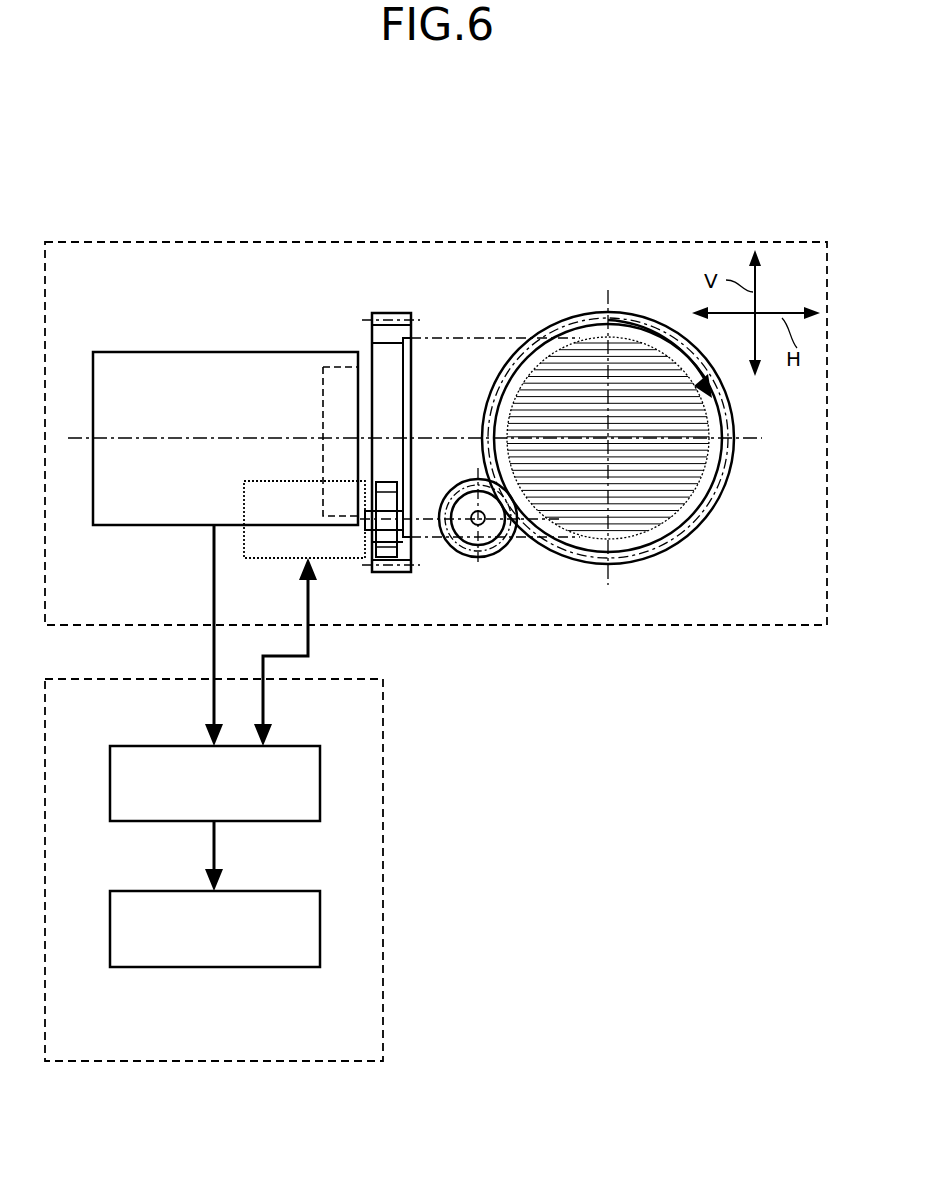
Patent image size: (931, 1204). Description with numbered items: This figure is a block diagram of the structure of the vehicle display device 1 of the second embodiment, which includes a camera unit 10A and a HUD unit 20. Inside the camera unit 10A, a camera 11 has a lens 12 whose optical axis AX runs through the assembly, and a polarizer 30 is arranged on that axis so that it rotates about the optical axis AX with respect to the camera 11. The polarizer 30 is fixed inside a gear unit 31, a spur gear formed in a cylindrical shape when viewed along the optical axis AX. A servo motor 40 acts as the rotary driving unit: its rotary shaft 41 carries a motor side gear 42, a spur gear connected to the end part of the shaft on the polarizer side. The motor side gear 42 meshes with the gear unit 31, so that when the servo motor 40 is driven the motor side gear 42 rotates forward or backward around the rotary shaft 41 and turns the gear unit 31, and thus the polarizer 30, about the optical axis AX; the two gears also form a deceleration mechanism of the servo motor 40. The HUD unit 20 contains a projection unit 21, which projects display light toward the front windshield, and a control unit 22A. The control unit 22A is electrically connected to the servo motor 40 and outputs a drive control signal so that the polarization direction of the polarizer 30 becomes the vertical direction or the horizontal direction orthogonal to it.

The vehicle display system 1 is at (493, 164).
The camera unit 10A is at (572, 242).
The camera 11 is at (130, 352).
The lens 12 is at (338, 352).
The HUD unit 20 is at (356, 680).
The projection unit 21 is at (318, 891).
The control unit 22A is at (318, 746).
The polarizer 30 is at (493, 395).
The gear unit 31 is at (547, 332).
The servo motor 40 is at (333, 558).
The rotary shaft 41 is at (457, 543).
The motor side gear 42 is at (398, 497).
The optical axis AX is at (80, 440).